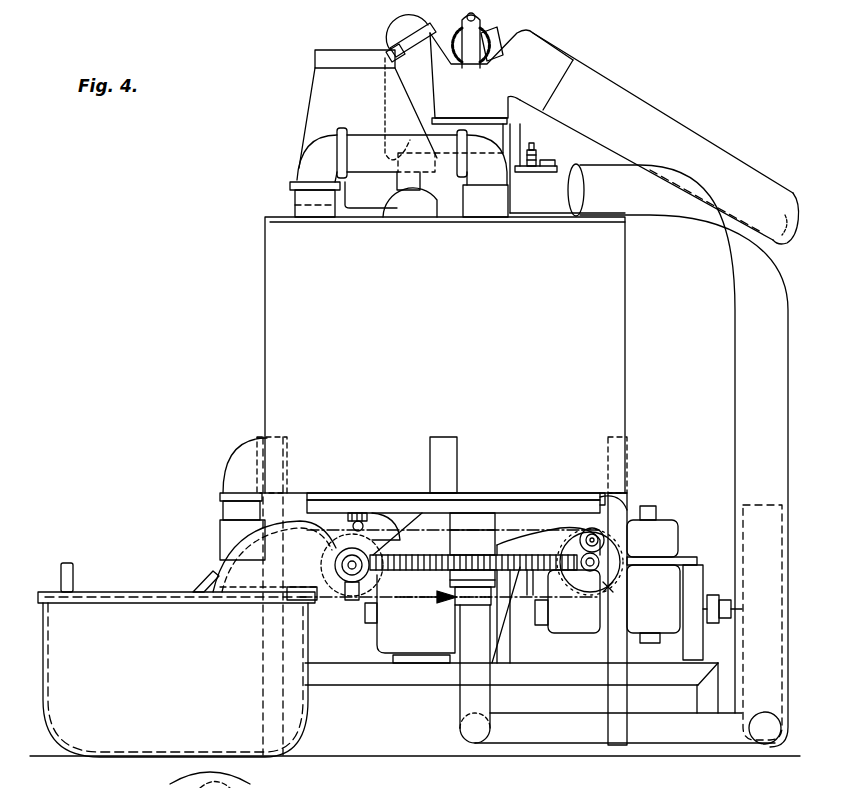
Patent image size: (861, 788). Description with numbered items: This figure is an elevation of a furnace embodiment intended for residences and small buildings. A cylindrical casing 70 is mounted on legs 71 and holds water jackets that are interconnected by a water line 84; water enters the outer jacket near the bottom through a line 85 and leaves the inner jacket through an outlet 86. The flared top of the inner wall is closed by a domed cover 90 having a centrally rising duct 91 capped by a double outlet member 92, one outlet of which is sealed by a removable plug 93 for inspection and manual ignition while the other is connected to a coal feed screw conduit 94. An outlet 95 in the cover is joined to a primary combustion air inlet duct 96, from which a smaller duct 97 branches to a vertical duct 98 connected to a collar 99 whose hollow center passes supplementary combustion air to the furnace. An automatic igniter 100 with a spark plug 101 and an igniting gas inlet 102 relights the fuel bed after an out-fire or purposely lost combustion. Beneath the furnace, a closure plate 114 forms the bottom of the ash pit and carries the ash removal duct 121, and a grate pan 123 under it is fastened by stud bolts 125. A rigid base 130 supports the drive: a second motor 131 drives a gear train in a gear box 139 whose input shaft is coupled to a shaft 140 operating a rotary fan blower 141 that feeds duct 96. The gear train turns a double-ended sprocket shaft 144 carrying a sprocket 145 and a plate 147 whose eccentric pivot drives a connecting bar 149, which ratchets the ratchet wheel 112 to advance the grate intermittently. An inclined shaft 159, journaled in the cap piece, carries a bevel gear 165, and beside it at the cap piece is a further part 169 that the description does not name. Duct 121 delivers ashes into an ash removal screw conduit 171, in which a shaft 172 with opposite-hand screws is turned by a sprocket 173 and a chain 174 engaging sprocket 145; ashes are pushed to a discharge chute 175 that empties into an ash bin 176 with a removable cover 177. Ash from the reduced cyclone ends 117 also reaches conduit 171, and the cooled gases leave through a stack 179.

The cylindrical casing 70 is at (268, 352).
The legs 71 is at (457, 490).
The water line 84 is at (360, 147).
The line 85 is at (235, 470).
The outlet 86 is at (402, 185).
The domed cover 90 is at (416, 218).
The centrally rising duct 91 is at (484, 128).
The double outlet member 92 is at (501, 74).
The plug 93 is at (398, 30).
The coal feed screw conduit 94 is at (633, 109).
The outlet 95 is at (558, 216).
The primary combustion air inlet duct 96 is at (736, 350).
The smaller duct 97 is at (680, 735).
The vertical duct 98 is at (462, 702).
The collar 99 is at (460, 608).
The automatic igniter 100 is at (520, 173).
The spark plug 101 is at (536, 155).
The igniting gas inlet 102 is at (548, 165).
The ratchet wheel 112 is at (418, 554).
The closure plate 114 is at (518, 481).
The lower reduced ends 117 is at (346, 518).
The ash removal duct 121 is at (382, 513).
The grate pan 123 is at (548, 506).
The stud bolts 125 is at (612, 493).
The rigid base 130 is at (568, 660).
The second motor 131 is at (385, 645).
The gear box 139 is at (660, 523).
The shaft 140 is at (722, 596).
The rotary fan blower 141 is at (762, 506).
The double-ended sprocket shaft 144 is at (598, 568).
The sprocket 145 is at (572, 587).
The plate 147 is at (600, 585).
The connecting bar 149 is at (606, 540).
The inclined shaft 159 is at (476, 18).
The bevel gear 165 is at (458, 30).
The bushing 169 is at (500, 36).
The ash removal screw conduit 171 is at (326, 553).
The shaft 172 is at (350, 572).
The sprocket 173 is at (375, 588).
The chain 174 is at (425, 600).
The discharge chute 175 is at (213, 578).
The ash bin 176 is at (80, 735).
The removable cover 177 is at (109, 583).
The stack 179 is at (311, 123).